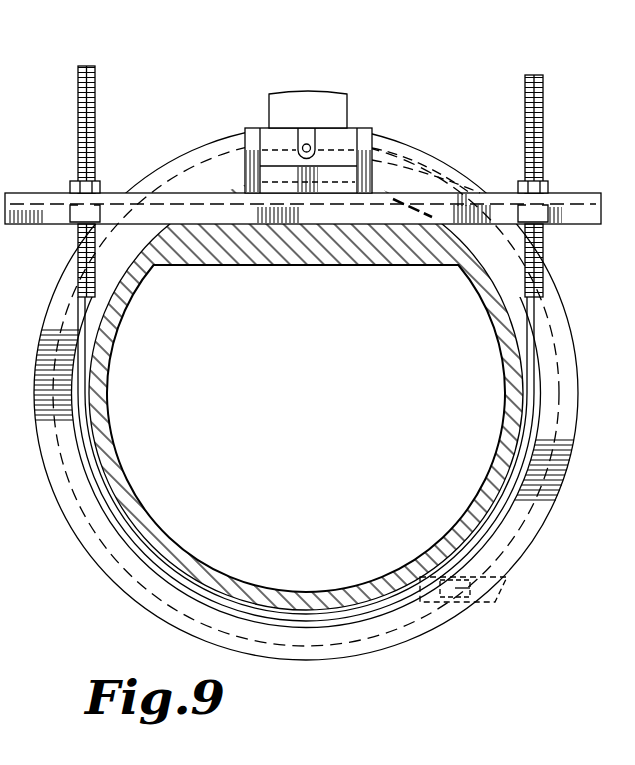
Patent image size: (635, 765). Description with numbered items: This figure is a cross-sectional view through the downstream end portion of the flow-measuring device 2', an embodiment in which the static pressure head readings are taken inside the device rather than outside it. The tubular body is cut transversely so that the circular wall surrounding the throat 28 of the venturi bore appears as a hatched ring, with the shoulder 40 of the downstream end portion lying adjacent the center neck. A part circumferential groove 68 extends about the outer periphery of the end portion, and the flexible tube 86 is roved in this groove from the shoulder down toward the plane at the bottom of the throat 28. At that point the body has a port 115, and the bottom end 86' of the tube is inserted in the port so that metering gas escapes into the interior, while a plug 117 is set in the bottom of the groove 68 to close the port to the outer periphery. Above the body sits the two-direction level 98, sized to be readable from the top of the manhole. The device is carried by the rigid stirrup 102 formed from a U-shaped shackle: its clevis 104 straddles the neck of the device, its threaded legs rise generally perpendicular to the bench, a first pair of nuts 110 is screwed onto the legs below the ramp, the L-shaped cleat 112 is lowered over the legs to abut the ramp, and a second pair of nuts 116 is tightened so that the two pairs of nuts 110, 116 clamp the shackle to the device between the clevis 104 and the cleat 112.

The device 2' is at (303, 117).
The throat 28 is at (508, 405).
The shoulder 40 is at (550, 362).
The part circumferential groove 68 is at (563, 468).
The flexible tube 86 is at (316, 141).
The bottom end of tube 86' is at (460, 545).
The two-direction level 98 is at (312, 90).
The rigid stirrup 102 is at (555, 117).
The clevis 104 is at (500, 530).
The nuts 110 is at (72, 226).
The L-shaped cleat 112 is at (480, 193).
The port 115 is at (417, 566).
The nuts 116 is at (100, 185).
The plugs 117 is at (472, 596).